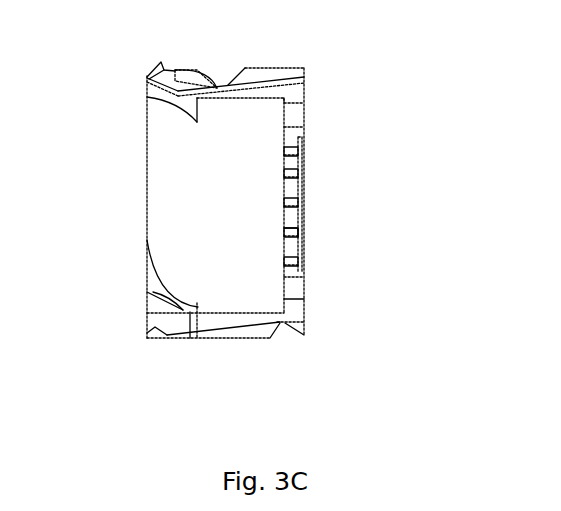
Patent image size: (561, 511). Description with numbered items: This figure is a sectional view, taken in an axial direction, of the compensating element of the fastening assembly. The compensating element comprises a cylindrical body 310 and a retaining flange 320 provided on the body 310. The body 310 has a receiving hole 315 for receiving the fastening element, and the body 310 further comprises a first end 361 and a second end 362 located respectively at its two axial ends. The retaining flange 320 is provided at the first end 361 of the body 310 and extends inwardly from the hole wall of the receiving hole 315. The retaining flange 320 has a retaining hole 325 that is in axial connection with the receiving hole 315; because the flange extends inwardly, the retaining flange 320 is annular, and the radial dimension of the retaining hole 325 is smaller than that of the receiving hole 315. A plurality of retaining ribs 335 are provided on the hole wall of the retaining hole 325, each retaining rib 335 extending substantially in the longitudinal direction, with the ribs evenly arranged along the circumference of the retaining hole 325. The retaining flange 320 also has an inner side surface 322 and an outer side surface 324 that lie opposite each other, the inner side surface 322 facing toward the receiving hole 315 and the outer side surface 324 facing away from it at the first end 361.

The cylindrical body 310 is at (255, 78).
The receiving hole 315 is at (183, 191).
The retaining flange 320 is at (295, 115).
The inner side surface 322 is at (284, 292).
The outer side surface 324 is at (305, 294).
The retaining hole 325 is at (290, 192).
The retaining rib 335 is at (293, 237).
The first end 361 is at (305, 75).
The second end 362 is at (147, 88).